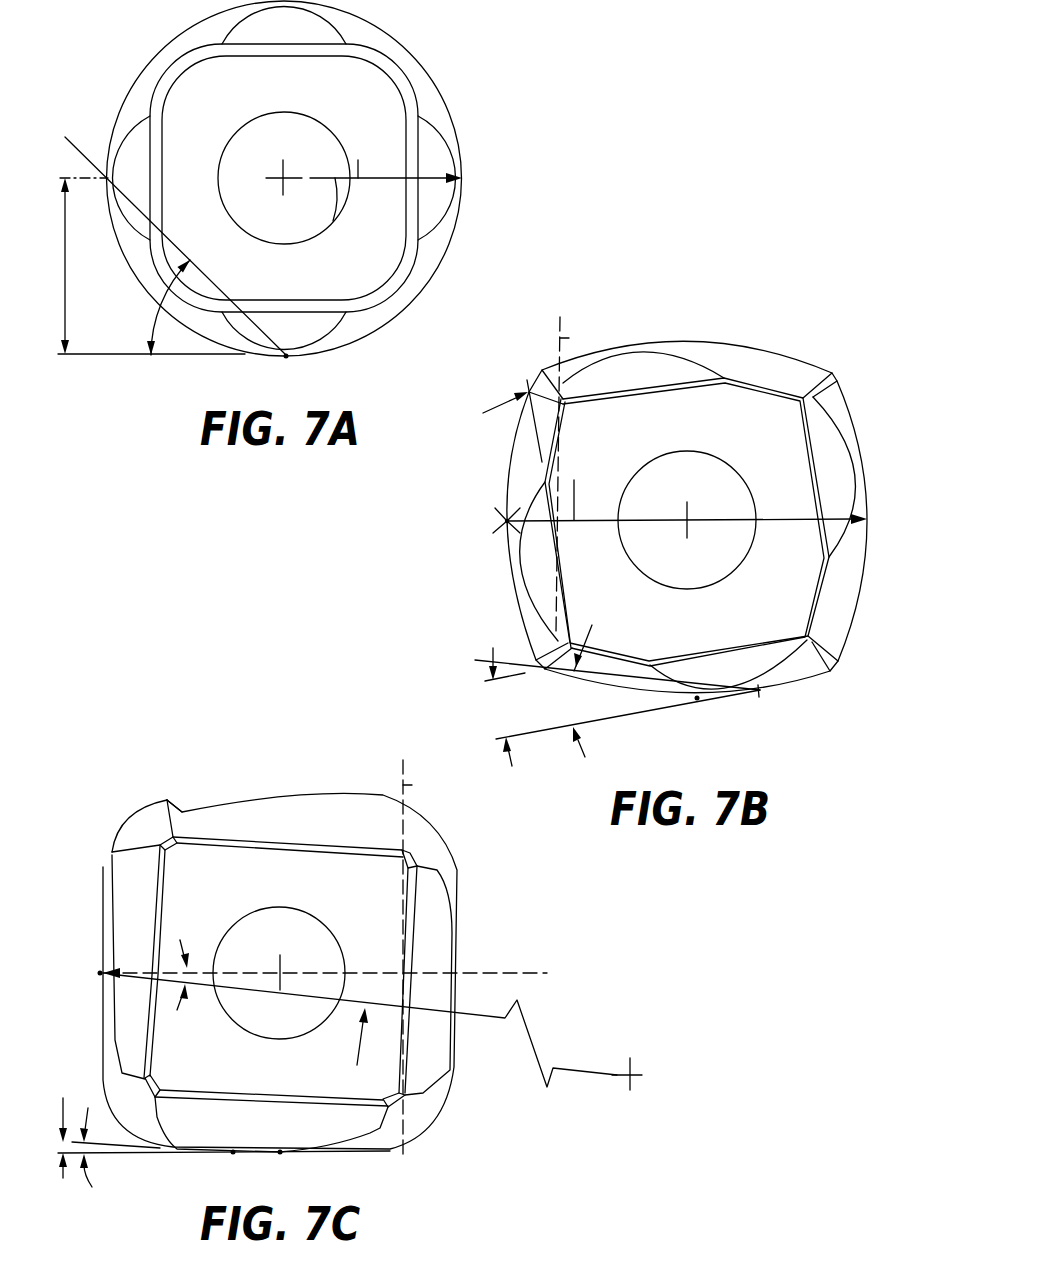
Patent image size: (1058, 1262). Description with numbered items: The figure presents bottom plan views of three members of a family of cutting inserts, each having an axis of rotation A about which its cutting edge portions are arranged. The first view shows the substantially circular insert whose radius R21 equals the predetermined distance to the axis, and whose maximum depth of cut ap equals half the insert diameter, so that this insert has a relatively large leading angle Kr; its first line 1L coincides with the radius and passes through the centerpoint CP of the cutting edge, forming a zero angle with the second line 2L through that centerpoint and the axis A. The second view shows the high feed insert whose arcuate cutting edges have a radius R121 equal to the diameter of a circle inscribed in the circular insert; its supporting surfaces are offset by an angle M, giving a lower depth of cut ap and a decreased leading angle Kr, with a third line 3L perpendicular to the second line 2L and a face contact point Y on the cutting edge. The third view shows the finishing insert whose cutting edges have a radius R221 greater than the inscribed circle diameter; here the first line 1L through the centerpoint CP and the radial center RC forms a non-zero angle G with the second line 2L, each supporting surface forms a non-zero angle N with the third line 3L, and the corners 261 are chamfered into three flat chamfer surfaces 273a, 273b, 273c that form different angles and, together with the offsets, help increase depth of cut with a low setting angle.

In FIG. 7A, the centerpoint of cutting edge CP is at (380, 275).
In FIG. 7B, the centerpoint of cutting edge CP is at (867, 519).
In FIG. 7C, the centerpoint of cutting edge CP is at (181, 1072).
In FIG. 7A, the radial center RC is at (282, 172).
In FIG. 7B, the radial center RC is at (503, 521).
In FIG. 7C, the radial center RC is at (634, 1072).
In FIG. 7A, the axis of rotation A is at (288, 176).
In FIG. 7B, the axis of rotation A is at (687, 521).
In FIG. 7C, the axis of rotation A is at (282, 973).
In FIG. 7A, the radius of cutting insert R21 is at (358, 160).
In FIG. 7B, the radius of cutting edges R121 is at (574, 480).
In FIG. 7C, the radius of cutting edges R221 is at (350, 1040).
In FIG. 7A, the first line 1L is at (387, 180).
In FIG. 7B, the first line 1L is at (778, 522).
In FIG. 7C, the first line 1L is at (477, 1018).
In FIG. 7A, the second line 2L is at (333, 221).
In FIG. 7B, the second line 2L is at (792, 520).
In FIG. 7C, the second line 2L is at (517, 973).
In FIG. 7B, the third line 3L is at (569, 338).
In FIG. 7C, the third line 3L is at (412, 785).
In FIG. 7A, the depth of cut ap is at (149, 266).
In FIG. 7B, the depth of cut ap is at (617, 683).
In FIG. 7C, the depth of cut ap is at (221, 1125).
In FIG. 7A, the leading angle Kr is at (150, 315).
In FIG. 7B, the leading angle Kr is at (628, 728).
In FIG. 7C, the leading angle Kr is at (116, 1160).
In FIG. 7B, the angle M is at (575, 383).
In FIG. 7C, the angle N is at (360, 878).
In FIG. 7B, the face contact point Y is at (761, 709).
In FIG. 7C, the face contact point Y is at (232, 1167).
In FIG. 7C, the angle G is at (178, 989).
In FIG. 7C, the corners 261 is at (128, 797).
In FIG. 7C, the chamfer surface 273a is at (112, 850).
In FIG. 7C, the chamfer surface 273b is at (135, 822).
In FIG. 7C, the chamfer surface 273c is at (160, 800).